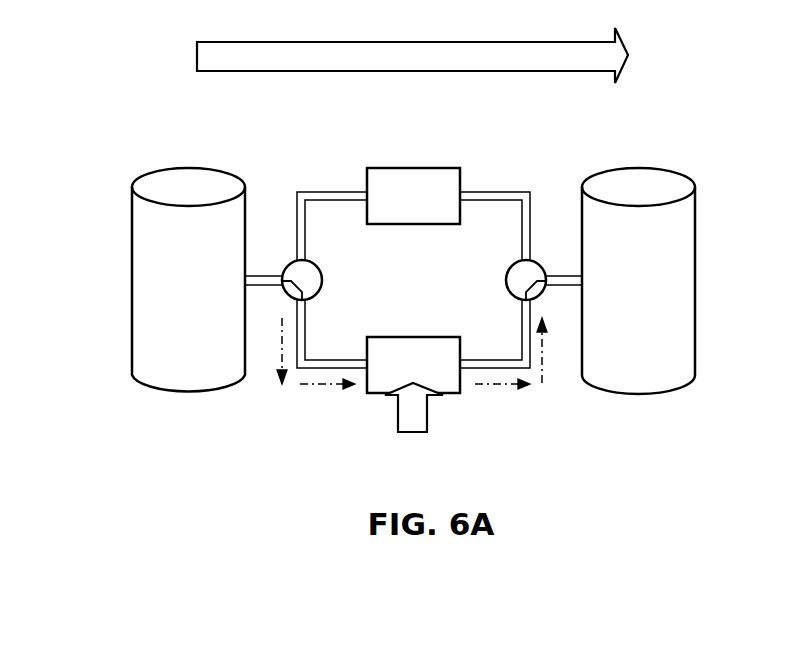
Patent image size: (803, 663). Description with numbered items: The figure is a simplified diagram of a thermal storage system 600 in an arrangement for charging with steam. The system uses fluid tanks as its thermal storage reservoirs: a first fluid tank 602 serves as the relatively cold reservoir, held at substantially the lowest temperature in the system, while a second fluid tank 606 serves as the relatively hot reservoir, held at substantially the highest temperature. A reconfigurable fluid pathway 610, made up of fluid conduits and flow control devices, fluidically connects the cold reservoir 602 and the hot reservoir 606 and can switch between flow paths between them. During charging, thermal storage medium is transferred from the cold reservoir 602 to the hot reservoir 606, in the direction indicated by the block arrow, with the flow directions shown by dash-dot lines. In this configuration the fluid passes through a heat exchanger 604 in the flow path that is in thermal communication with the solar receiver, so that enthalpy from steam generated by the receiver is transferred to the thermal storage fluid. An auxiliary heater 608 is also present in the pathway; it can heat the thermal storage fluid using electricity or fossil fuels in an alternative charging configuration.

The thermal storage system 600 is at (95, 95).
The first fluid tank 602 is at (132, 242).
The heat exchanger 604 is at (453, 395).
The second fluid tank 606 is at (697, 273).
The auxiliary heater 608 is at (392, 167).
The reconfigurable fluid pathway 610 is at (545, 177).